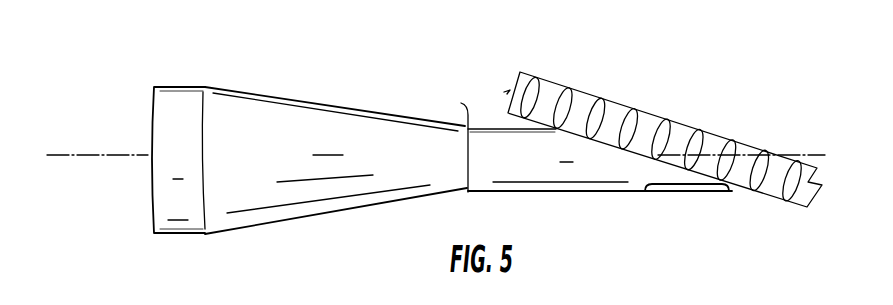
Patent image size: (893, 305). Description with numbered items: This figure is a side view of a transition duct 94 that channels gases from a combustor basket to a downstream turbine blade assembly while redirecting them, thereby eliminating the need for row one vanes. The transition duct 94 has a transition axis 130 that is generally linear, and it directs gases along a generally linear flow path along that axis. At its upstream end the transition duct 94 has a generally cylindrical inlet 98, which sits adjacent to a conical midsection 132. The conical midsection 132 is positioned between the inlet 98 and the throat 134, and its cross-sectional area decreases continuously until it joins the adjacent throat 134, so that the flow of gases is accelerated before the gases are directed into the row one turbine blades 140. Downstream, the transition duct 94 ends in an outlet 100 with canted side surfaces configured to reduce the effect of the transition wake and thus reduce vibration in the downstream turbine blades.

The transition duct 94 is at (583, 233).
The inlet 98 is at (148, 138).
The conical midsection 132 is at (466, 112).
The throat 134 is at (461, 100).
The outlet 100 is at (742, 85).
The transition axis 130 is at (810, 150).
The row one turbine blades 140 is at (737, 143).